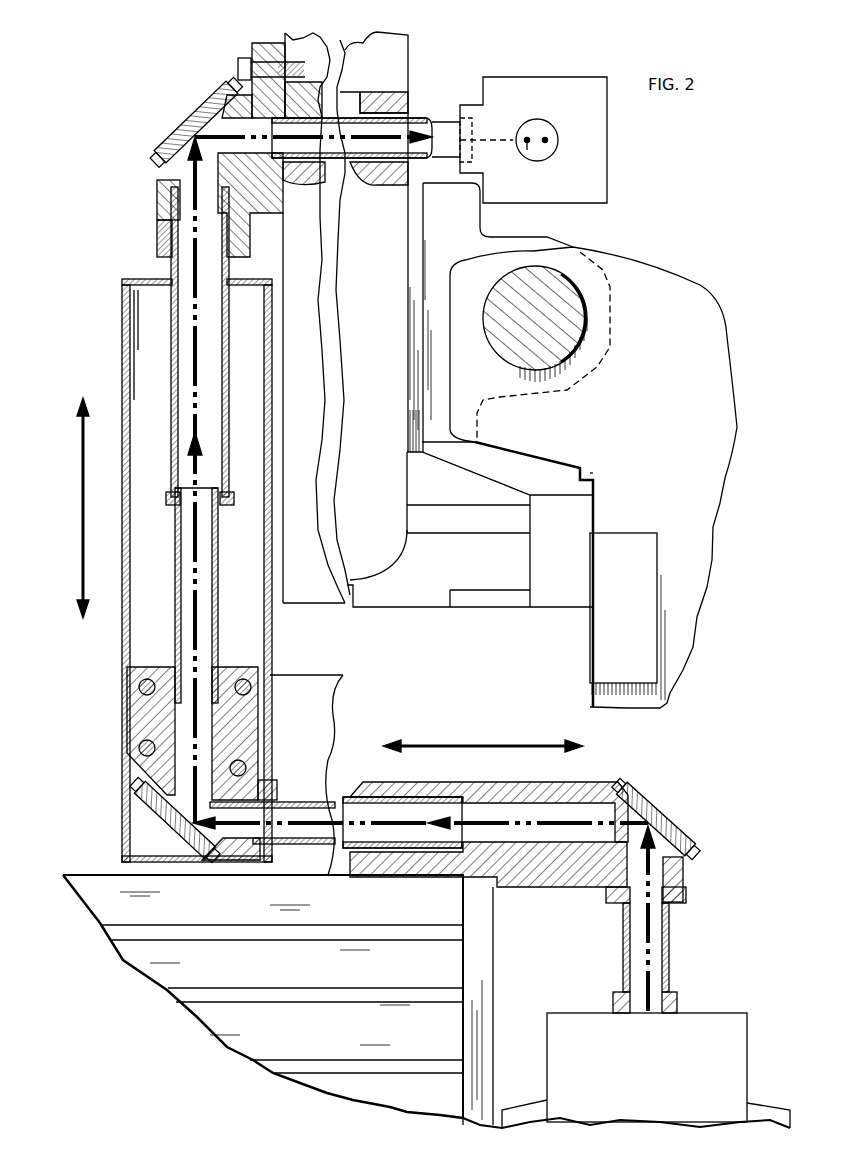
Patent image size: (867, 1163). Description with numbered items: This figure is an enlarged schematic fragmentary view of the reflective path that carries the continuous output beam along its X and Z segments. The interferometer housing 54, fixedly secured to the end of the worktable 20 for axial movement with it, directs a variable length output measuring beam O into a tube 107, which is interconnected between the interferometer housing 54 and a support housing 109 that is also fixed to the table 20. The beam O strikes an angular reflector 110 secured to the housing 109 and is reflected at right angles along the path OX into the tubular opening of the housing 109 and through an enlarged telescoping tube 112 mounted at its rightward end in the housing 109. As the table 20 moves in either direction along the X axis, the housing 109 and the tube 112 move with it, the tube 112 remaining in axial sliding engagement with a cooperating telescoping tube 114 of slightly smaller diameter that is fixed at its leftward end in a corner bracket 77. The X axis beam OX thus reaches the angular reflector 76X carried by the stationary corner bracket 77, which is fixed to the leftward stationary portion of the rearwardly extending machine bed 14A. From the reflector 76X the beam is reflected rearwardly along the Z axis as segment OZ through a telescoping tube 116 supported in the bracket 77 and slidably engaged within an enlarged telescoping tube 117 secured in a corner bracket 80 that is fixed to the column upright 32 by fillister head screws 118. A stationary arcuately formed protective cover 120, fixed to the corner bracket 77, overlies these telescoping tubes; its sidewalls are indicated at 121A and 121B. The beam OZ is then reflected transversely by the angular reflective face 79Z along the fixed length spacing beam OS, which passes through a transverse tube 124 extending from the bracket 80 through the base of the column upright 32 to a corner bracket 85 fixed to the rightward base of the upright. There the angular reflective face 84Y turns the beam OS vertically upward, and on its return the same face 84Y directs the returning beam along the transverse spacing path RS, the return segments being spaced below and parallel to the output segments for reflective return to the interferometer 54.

The column upright 32 is at (300, 40).
The fillister head screws 118 is at (238, 64).
The transverse tube 124 is at (250, 88).
The angular reflective face 79Z is at (190, 124).
The corner bracket 80 is at (158, 200).
The enlarged telescoping tube 117 is at (172, 273).
The protective cover 120 is at (190, 573).
The housing left wall 121A is at (125, 666).
The housing right wall 121B is at (271, 656).
The telescoping tube 116 is at (176, 636).
The Z axis Z is at (80, 531).
The Z axis beam segment OZ is at (193, 469).
The fixed length transverse spacing beam OS is at (209, 118).
The corner bracket 85 is at (528, 80).
The angular reflective face 84Y is at (540, 123).
The transverse spacing return path RS is at (526, 148).
The machine bed 14A is at (336, 700).
The corner bracket 77 is at (143, 738).
The angular reflector 76X is at (175, 801).
The X axis measuring beam OX is at (338, 798).
The X axis X is at (472, 747).
The enlarged telescoping tube 112 is at (441, 797).
The support housing 109 is at (600, 791).
The angular reflector 110 is at (655, 813).
The telescoping tube 114 is at (330, 858).
The worktable 20 is at (241, 1040).
The output measuring beam O is at (651, 951).
The tube 107 is at (665, 976).
The interferometer housing 54 is at (728, 1040).